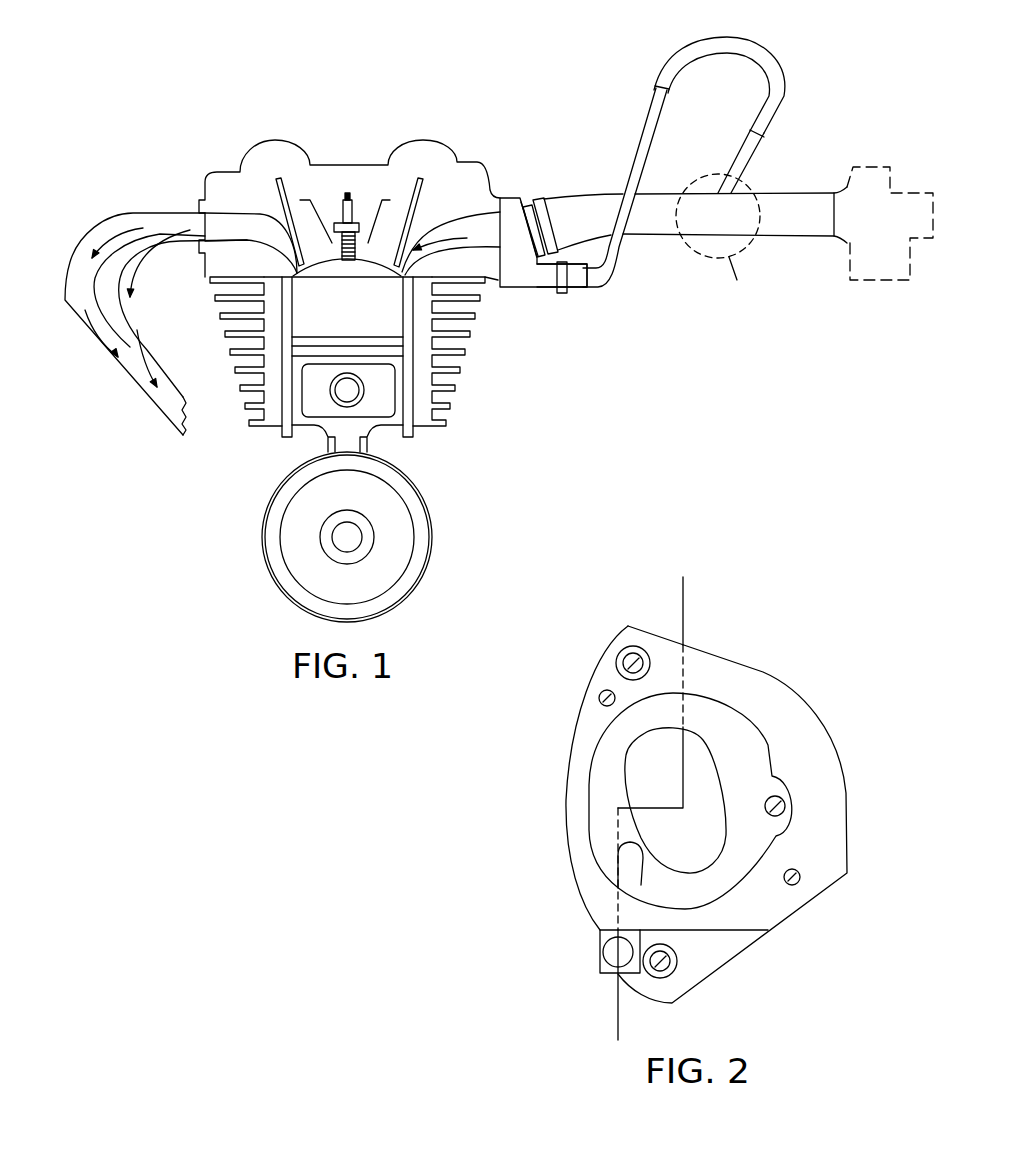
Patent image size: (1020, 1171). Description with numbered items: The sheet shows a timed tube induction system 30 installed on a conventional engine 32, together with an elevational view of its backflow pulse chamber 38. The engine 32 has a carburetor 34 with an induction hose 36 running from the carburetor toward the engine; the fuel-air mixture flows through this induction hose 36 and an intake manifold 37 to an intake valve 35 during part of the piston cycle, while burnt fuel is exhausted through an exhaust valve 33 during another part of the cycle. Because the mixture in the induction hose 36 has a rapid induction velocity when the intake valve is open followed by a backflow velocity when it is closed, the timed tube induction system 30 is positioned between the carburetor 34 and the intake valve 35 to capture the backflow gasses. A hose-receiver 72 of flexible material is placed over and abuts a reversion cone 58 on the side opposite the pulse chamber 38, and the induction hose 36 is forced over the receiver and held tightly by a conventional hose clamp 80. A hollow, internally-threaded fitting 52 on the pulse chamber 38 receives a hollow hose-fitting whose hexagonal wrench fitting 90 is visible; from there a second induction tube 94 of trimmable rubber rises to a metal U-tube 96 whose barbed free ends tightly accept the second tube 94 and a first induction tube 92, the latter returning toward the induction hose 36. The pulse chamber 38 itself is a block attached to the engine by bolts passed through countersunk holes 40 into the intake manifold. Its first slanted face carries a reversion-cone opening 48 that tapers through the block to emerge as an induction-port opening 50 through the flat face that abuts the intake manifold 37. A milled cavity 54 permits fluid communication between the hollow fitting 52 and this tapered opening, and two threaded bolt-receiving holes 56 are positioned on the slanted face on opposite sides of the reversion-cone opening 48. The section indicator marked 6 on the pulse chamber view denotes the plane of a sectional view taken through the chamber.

In FIG. 1, the timed tube induction system 30 is at (645, 70).
In FIG. 1, the engine 32 is at (348, 163).
In FIG. 1, the exhaust valve 33 is at (315, 270).
In FIG. 1, the carburetor 34 is at (885, 163).
In FIG. 1, the intake valve 35 is at (377, 278).
In FIG. 1, the induction hose 36 is at (774, 193).
In FIG. 1, the intake manifold 37 is at (466, 230).
In FIG. 1, the backflow pulse chamber 38 is at (513, 208).
In FIG. 2, the backflow pulse chamber 38 is at (718, 692).
In FIG. 2, the countersunk holes 40 is at (630, 667).
In FIG. 2, the reversion-cone opening 48 is at (607, 760).
In FIG. 2, the induction-port opening 50 is at (710, 768).
In FIG. 1, the threaded fitting 52 is at (547, 277).
In FIG. 2, the threaded fitting 52 is at (602, 952).
In FIG. 2, the cavity 54 is at (615, 862).
In FIG. 2, the bolt-receiving holes 56 is at (602, 698).
In FIG. 1, the reversion cone 58 is at (527, 207).
In FIG. 1, the hose-receiver 72 is at (532, 207).
In FIG. 1, the hose clamp 80 is at (536, 202).
In FIG. 1, the wrench fitting 90 is at (560, 293).
In FIG. 1, the first induction tube 92 is at (738, 163).
In FIG. 1, the second induction tube 94 is at (633, 175).
In FIG. 1, the U-tube 96 is at (760, 55).
In FIG. 2, the section line 6- 6 is at (683, 577).